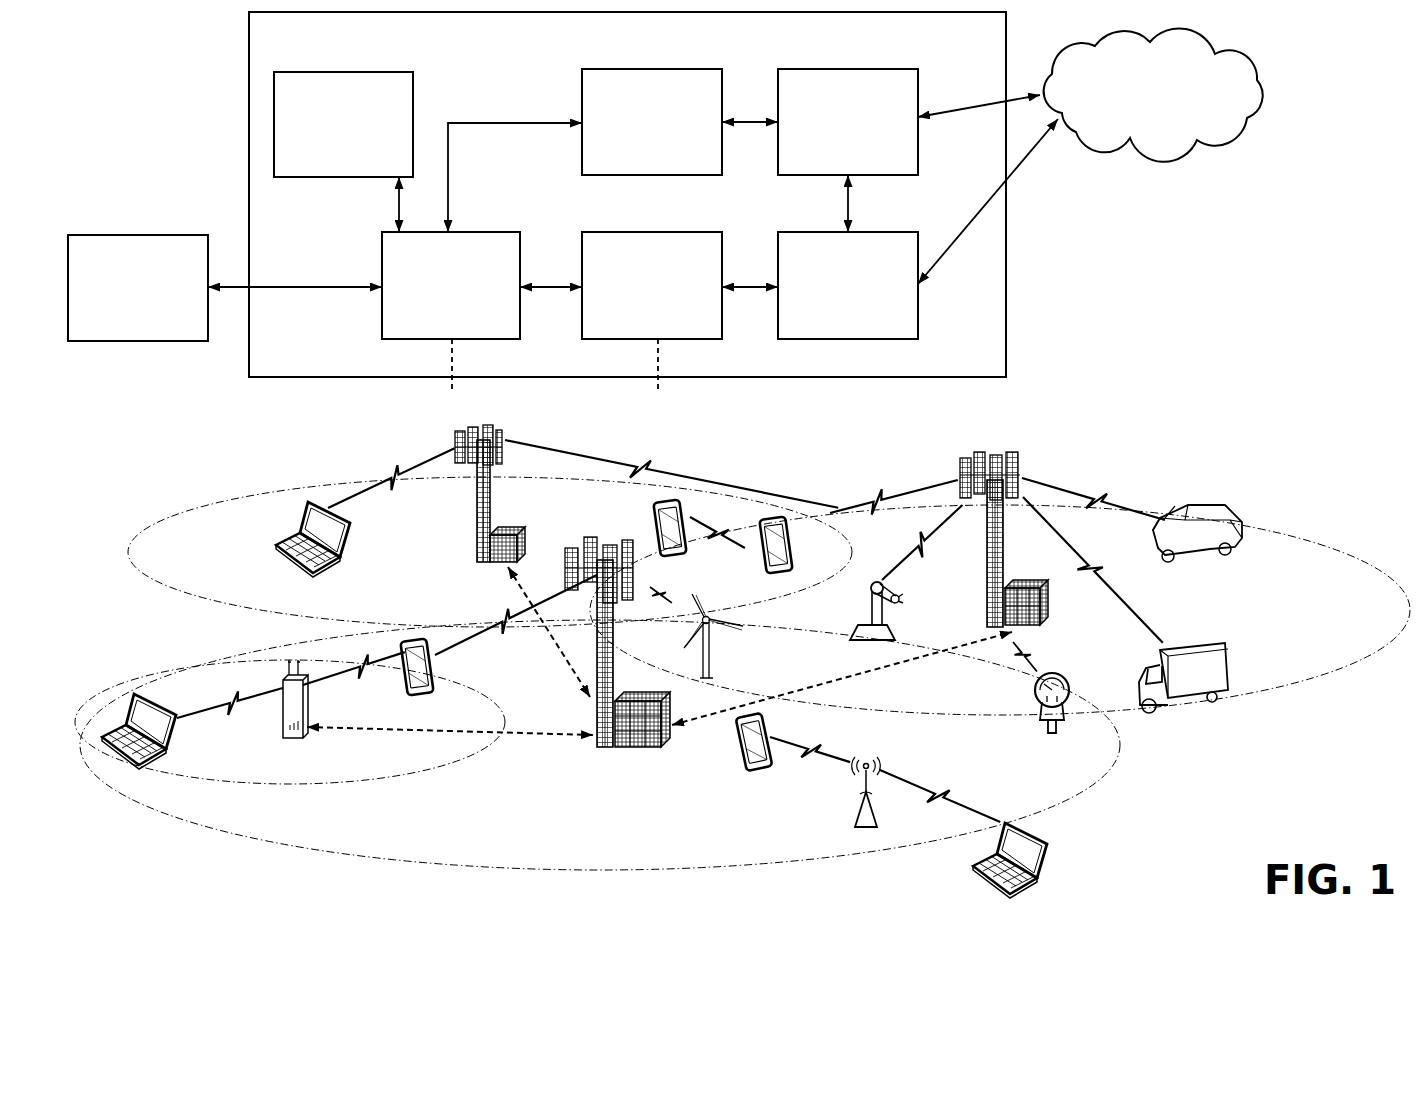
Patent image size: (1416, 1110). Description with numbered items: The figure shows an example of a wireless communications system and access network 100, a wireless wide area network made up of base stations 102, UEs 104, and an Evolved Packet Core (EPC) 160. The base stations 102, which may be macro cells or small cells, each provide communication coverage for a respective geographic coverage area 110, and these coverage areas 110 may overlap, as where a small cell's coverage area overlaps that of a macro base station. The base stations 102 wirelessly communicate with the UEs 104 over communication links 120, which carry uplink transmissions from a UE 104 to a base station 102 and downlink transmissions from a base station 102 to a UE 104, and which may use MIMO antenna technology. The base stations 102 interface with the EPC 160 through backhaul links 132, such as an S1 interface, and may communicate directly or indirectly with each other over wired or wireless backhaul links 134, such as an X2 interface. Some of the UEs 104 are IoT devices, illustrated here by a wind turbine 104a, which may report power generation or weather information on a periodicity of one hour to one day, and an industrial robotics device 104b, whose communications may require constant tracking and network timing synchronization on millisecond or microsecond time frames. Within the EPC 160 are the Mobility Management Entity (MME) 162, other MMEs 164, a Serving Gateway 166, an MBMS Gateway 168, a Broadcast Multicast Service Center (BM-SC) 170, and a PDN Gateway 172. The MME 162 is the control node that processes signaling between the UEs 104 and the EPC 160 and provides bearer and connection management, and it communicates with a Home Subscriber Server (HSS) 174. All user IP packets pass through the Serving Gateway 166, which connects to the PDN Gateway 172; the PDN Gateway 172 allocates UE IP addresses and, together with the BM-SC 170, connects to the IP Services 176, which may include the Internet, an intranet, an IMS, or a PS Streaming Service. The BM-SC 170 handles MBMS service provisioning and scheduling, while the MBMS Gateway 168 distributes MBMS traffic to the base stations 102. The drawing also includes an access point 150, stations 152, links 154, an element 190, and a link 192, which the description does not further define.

The wireless communications system and access network 100 is at (151, 69).
The base station 102 is at (477, 531).
The UE 104 is at (334, 570).
The wind turbine 104a is at (713, 662).
The industrial robotics device 104b is at (880, 625).
The geographic coverage area 110 is at (184, 616).
The communication link 120 is at (394, 474).
The backhaul link 132 is at (453, 382).
The backhaul link 134 is at (560, 654).
The Wi-Fi access point 150 is at (866, 830).
The Wi-Fi station 152 is at (726, 750).
The WLAN communication link 154 is at (814, 745).
The Evolved Packet Core 160 is at (481, 77).
The Mobility Management Entity 162 is at (477, 232).
The other MMEs 164 is at (342, 72).
The Serving Gateway 166 is at (679, 232).
The MBMS Gateway 168 is at (639, 69).
The Broadcast Multicast Service Center 170 is at (894, 69).
The PDN Gateway 172 is at (892, 232).
The Home Subscriber Server 174 is at (177, 235).
The IP Services 176 is at (1197, 42).
The network entity 190 is at (1390, 176).
The device-to-device (D2D) link 192 is at (742, 544).